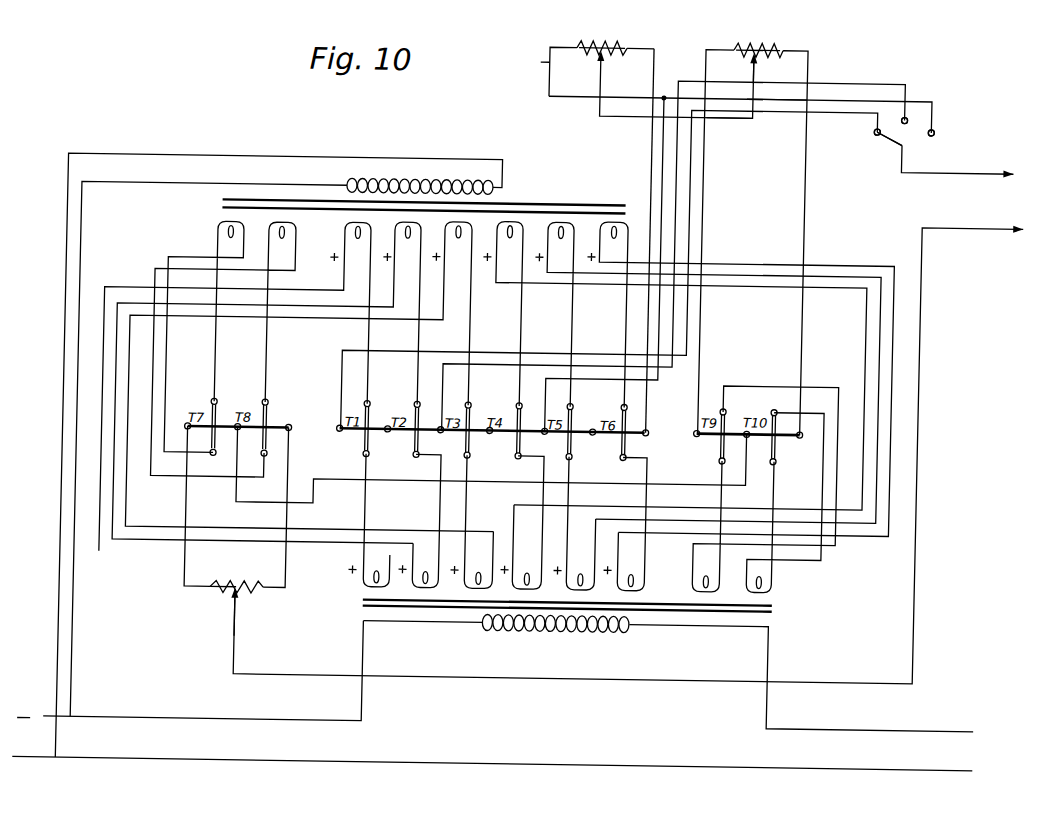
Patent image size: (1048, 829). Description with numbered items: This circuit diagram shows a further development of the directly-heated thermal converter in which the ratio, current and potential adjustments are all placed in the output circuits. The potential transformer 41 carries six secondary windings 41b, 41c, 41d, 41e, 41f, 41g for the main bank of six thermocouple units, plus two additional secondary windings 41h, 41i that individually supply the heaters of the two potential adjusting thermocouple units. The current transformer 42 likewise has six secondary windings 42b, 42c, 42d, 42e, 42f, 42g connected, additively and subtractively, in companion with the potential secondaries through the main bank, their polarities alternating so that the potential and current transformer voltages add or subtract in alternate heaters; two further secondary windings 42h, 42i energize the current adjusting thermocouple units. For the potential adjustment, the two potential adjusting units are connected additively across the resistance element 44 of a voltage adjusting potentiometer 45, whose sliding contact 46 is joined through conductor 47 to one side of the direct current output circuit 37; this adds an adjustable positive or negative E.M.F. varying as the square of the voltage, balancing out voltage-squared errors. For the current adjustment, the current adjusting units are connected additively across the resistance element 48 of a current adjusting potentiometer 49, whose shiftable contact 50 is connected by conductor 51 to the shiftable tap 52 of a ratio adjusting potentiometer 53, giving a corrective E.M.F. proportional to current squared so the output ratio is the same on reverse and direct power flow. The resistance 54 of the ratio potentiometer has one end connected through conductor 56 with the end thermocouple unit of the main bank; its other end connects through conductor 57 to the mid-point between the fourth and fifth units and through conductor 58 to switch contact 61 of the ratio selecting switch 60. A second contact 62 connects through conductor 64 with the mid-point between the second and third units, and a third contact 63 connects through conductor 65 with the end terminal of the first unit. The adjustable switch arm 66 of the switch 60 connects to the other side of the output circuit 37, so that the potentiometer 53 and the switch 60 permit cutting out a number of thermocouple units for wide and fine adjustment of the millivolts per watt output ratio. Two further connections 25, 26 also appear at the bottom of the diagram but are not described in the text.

The supply terminal 25 is at (187, 683).
The supply terminal 26 is at (800, 693).
The direct current output circuit 37 is at (960, 179).
The potential transformer 41 is at (507, 192).
The potential transformer secondary winding 41b is at (235, 387).
The potential transformer secondary winding 41c is at (266, 381).
The potential transformer secondary winding 41d is at (312, 374).
The potential transformer secondary winding 41e is at (673, 365).
The potential transformer secondary winding 41f is at (706, 372).
The potential transformer secondary winding 41g is at (738, 379).
The additional potential secondary winding 41h is at (204, 337).
The additional potential secondary winding 41i is at (224, 348).
The current transformer 42 is at (785, 616).
The current transformer secondary winding 42b is at (378, 566).
The current transformer secondary winding 42c is at (419, 521).
The current transformer secondary winding 42d is at (472, 522).
The current transformer secondary winding 42e is at (522, 523).
The current transformer secondary winding 42f is at (575, 523).
The current transformer secondary winding 42g is at (625, 524).
The additional current secondary winding 42h is at (765, 490).
The additional current secondary winding 42i is at (766, 565).
The resistance element 44 is at (236, 510).
The voltage adjusting potentiometer 45 is at (210, 600).
The sliding contact 46 is at (243, 607).
The conductor 47 is at (303, 678).
The resistance element 48 is at (749, 43).
The current adjusting potentiometer 49 is at (732, 33).
The shiftable contact 50 is at (752, 67).
The conductor 51 is at (724, 116).
The shiftable tap 52 is at (590, 62).
The ratio adjusting potentiometer 53 is at (565, 33).
The resistance 54 is at (594, 44).
The conductor 56 is at (647, 59).
The conductor 57 is at (545, 394).
The conductor 58 is at (771, 97).
The ratio selecting switch 60 is at (940, 103).
The switch contact 61 is at (928, 127).
The second contact 62 is at (900, 111).
The third contact 63 is at (866, 150).
The conductor 64 is at (853, 80).
The conductor 65 is at (820, 109).
The adjustable switch arm 66 is at (886, 139).